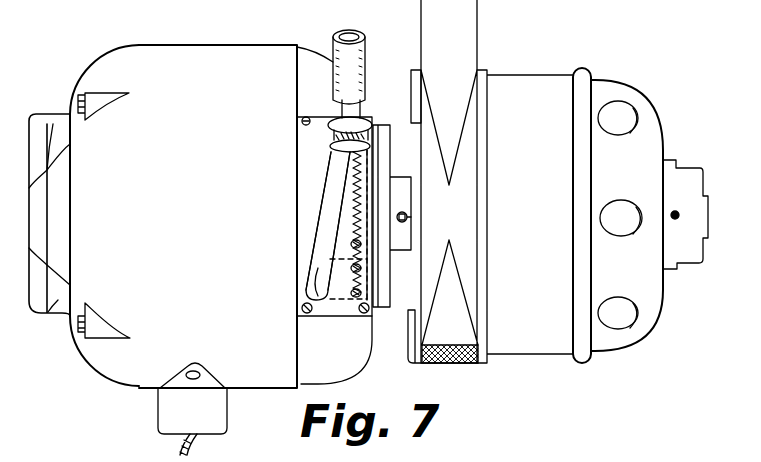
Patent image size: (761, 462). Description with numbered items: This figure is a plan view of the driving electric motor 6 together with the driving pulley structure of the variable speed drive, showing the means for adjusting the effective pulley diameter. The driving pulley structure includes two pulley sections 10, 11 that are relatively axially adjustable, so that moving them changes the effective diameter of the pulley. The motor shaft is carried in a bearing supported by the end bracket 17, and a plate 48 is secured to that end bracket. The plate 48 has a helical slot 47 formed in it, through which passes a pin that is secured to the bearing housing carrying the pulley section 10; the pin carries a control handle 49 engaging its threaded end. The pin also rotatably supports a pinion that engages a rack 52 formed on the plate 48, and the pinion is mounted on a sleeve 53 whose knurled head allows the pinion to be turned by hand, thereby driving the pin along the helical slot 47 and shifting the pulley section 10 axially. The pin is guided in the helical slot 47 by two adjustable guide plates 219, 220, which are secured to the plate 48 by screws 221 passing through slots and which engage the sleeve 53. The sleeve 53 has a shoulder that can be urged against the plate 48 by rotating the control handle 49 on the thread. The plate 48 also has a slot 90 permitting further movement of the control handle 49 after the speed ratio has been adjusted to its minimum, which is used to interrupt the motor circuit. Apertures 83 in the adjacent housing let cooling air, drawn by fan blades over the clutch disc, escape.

The driving electric motor 6 is at (231, 122).
The end bracket 17 is at (325, 50).
The control handle 49 is at (365, 64).
The plate 48 is at (316, 118).
The sleeve 53 is at (335, 130).
The helical slot 47 is at (325, 200).
The adjustable guide plate 219 is at (335, 230).
The rack 52 is at (355, 205).
The adjustable guide plate 220 is at (330, 275).
The slot 90 is at (315, 290).
The screws 221 is at (357, 268).
The pulley section 11 is at (471, 102).
The pulley section 10 is at (436, 131).
The apertures 83 is at (630, 108).